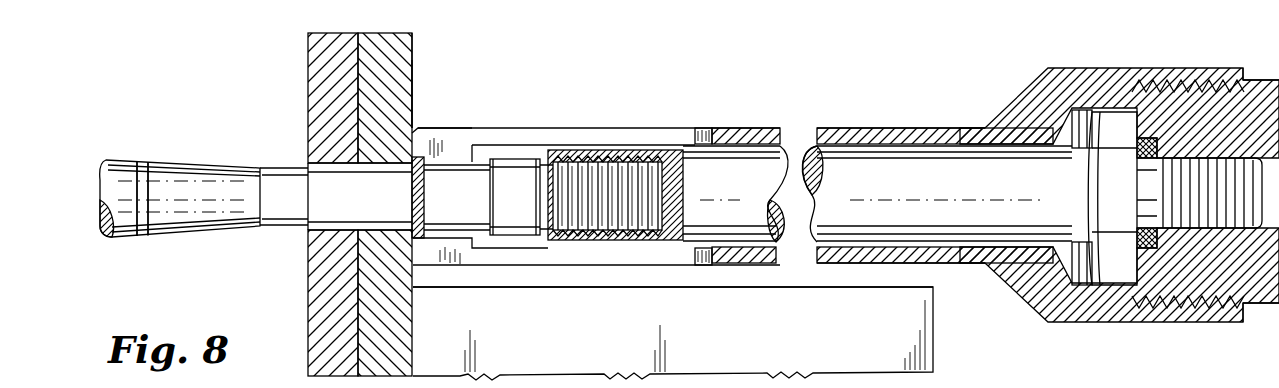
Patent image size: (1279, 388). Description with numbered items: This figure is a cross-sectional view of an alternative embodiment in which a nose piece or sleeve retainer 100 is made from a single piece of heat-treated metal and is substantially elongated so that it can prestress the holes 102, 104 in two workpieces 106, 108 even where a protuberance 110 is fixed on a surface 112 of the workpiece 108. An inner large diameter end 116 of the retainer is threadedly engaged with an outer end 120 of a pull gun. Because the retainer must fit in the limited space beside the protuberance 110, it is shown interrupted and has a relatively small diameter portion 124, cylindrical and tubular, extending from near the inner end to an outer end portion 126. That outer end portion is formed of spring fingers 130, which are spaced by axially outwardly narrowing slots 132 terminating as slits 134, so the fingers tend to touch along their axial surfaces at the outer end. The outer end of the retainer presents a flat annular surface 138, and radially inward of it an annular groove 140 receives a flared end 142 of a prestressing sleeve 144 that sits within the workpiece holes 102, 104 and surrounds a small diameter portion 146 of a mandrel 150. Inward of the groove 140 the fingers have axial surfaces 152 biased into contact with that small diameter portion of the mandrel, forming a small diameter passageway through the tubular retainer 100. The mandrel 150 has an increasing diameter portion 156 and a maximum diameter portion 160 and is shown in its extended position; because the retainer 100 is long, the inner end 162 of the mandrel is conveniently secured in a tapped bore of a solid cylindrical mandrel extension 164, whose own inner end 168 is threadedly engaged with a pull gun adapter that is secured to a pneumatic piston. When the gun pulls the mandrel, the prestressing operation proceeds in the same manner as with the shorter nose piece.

The sleeve retainer 100 is at (848, 108).
The hole 102 is at (308, 166).
The hole 104 is at (412, 120).
The workpiece 106 is at (320, 83).
The workpiece 108 is at (412, 56).
The protuberance 110 is at (926, 327).
The surface 112 is at (412, 78).
The inner large diameter end 116 is at (1167, 75).
The outer end 120 is at (1263, 307).
The small diameter portion 124 is at (740, 128).
The outer end portion 126 is at (450, 128).
The spring fingers 130 is at (585, 128).
The slots 132 is at (587, 257).
The slits 134 is at (438, 252).
The flat annular surface 138 is at (417, 243).
The annular groove 140 is at (412, 237).
The flared end 142 is at (426, 197).
The prestressing sleeve 144 is at (372, 207).
The small diameter portion 146 is at (278, 208).
The mandrel 150 is at (199, 203).
The axial surfaces 152 is at (468, 222).
The increasing diameter portion 156 is at (176, 176).
The maximum diameter portion 160 is at (138, 160).
The inner end 162 is at (567, 193).
The mandrel extension 164 is at (850, 203).
The inner end 168 is at (1190, 200).